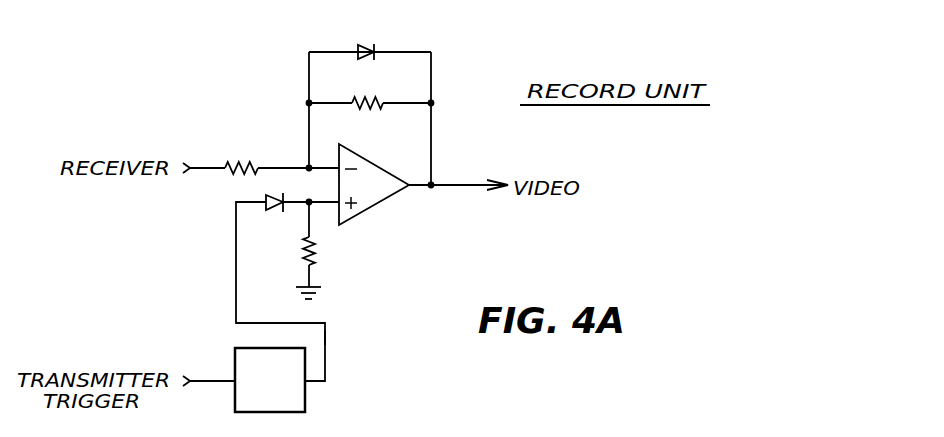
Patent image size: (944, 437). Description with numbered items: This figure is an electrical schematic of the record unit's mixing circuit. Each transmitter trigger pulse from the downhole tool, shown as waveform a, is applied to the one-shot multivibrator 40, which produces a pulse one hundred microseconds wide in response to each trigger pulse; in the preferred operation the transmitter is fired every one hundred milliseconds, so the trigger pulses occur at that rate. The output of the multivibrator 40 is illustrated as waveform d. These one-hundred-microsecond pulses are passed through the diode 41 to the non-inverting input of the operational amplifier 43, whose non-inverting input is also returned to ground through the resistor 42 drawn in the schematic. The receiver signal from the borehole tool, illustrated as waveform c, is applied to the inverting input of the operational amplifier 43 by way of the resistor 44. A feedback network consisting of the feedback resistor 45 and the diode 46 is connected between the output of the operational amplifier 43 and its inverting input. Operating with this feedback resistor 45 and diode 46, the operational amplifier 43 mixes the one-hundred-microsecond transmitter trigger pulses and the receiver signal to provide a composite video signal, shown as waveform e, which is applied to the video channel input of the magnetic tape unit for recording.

The one-shot multivibrator 40 is at (305, 396).
The diode 41 is at (276, 209).
The resistor 42 is at (313, 250).
The operational amplifier 43 is at (388, 200).
The resistor 44 is at (243, 157).
The feedback resistor 45 is at (367, 110).
The diode 46 is at (370, 45).
The transmitter trigger pulse waveform a is at (222, 380).
The receiver signal waveform c is at (212, 165).
The multivibrator output waveform d is at (327, 340).
The composite video signal waveform e is at (450, 183).